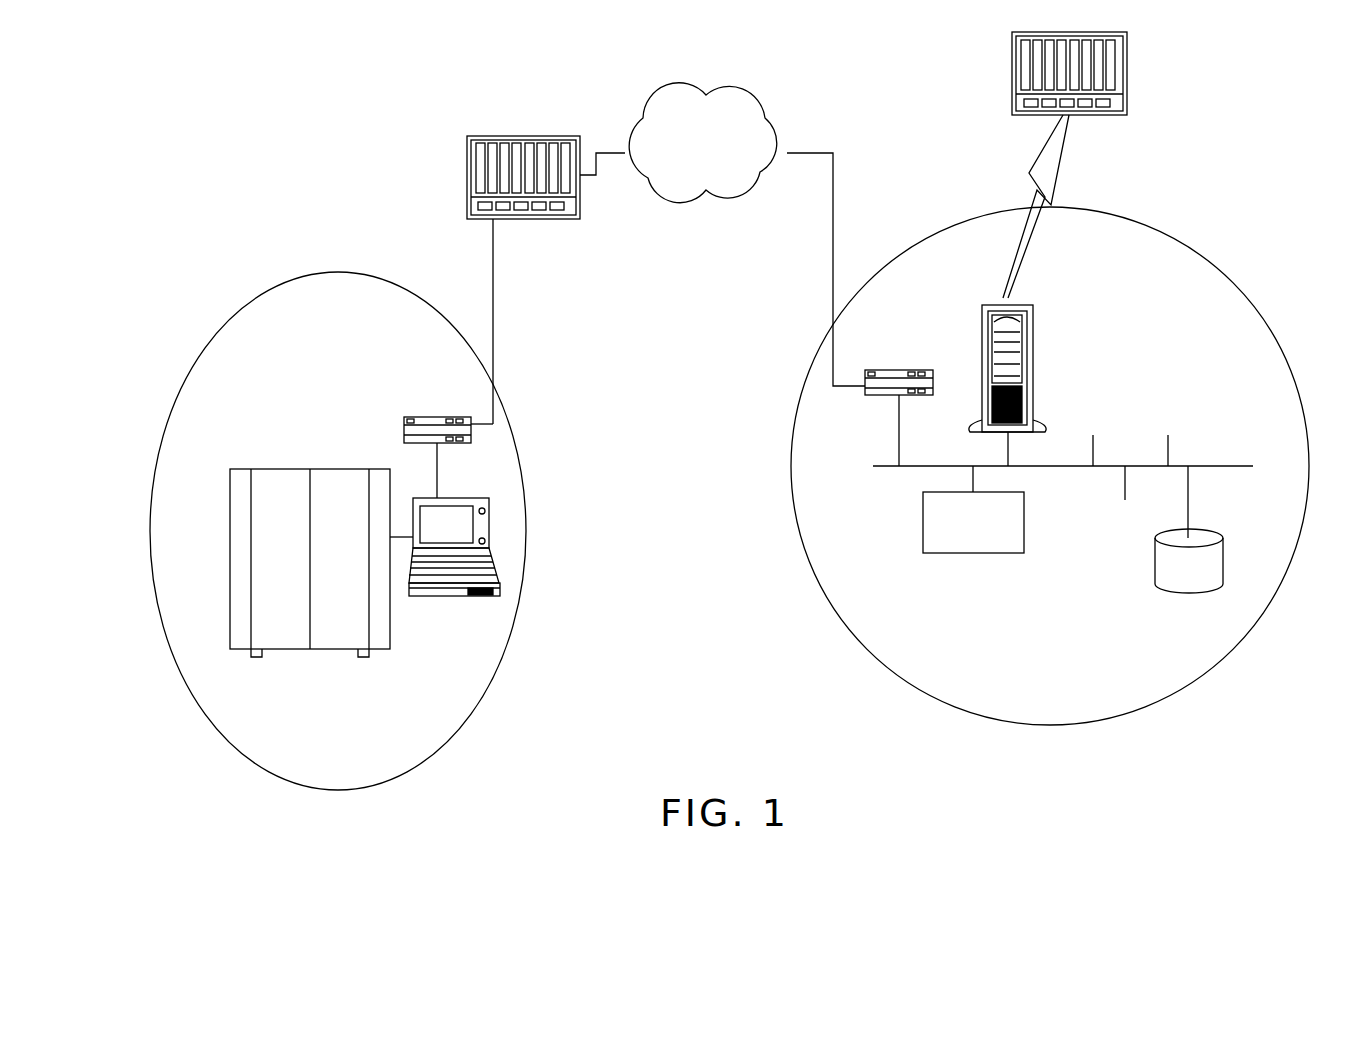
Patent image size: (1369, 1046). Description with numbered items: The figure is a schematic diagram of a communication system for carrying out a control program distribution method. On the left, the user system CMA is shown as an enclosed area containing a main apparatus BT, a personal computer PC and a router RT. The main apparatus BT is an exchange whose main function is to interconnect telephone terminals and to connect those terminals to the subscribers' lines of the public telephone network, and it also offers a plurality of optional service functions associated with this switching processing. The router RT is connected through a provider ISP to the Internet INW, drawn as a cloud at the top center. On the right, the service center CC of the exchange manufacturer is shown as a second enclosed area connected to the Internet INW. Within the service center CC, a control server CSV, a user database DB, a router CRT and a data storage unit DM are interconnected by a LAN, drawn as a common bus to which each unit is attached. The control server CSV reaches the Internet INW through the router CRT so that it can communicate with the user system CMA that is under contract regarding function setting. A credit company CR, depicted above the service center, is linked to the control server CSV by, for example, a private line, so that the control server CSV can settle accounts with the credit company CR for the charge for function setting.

The user system CMA is at (243, 300).
The main apparatus BT is at (266, 468).
The router RT is at (436, 417).
The personal computer PC is at (499, 562).
The provider ISP is at (545, 220).
The Internet INW is at (770, 101).
The credit company CR is at (1012, 68).
The service center CC is at (1205, 687).
The router CRT is at (898, 370).
The control server CSV is at (1034, 356).
The element LAN is at (1216, 466).
The data storage unit DM is at (978, 557).
The user database DB is at (1152, 563).